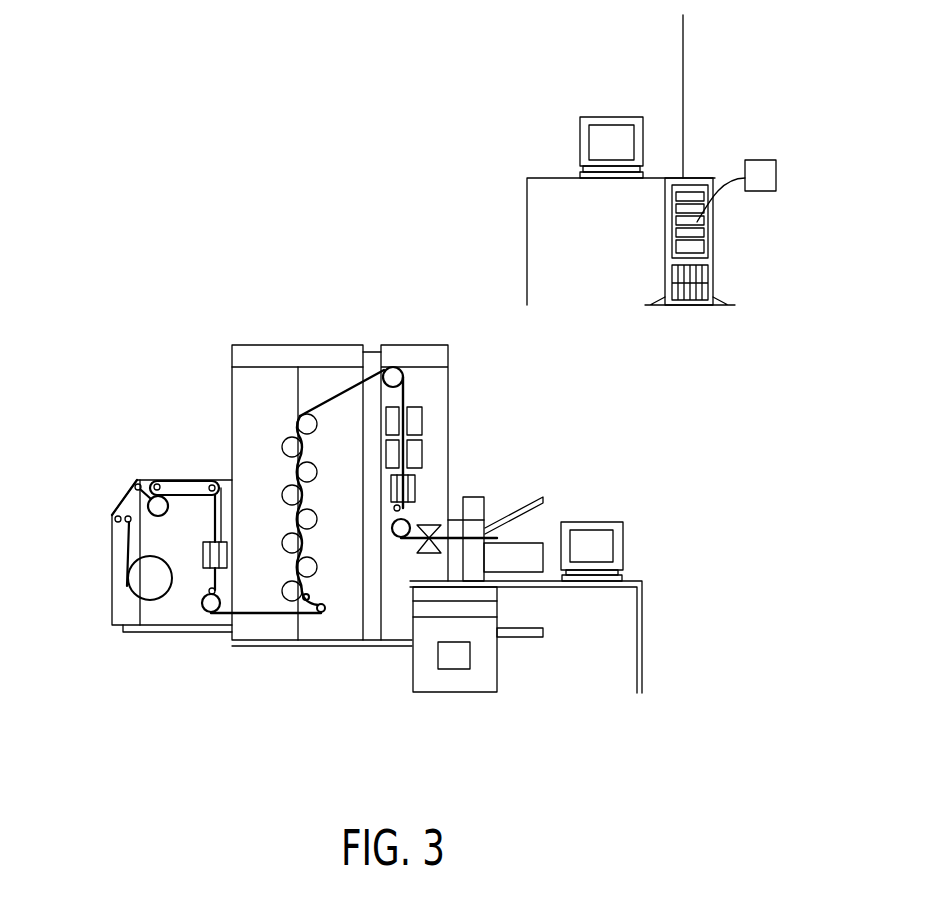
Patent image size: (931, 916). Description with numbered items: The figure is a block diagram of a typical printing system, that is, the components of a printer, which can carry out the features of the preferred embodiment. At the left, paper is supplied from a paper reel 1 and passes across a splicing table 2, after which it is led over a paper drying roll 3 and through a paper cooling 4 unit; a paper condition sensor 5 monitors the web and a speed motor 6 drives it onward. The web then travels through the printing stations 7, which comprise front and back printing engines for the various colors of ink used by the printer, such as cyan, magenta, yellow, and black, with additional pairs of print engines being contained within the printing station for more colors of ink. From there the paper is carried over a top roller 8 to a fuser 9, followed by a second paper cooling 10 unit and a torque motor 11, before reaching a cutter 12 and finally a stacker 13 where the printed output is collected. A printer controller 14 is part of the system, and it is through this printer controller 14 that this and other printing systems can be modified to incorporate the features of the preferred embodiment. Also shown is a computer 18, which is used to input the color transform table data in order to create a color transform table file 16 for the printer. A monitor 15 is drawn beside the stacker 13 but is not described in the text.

The paper reel 1 is at (147, 590).
The splicing table 2 is at (117, 496).
The paper drying roll 3 is at (150, 478).
The paper cooling 4 is at (210, 545).
The paper condition sensor 5 is at (203, 612).
The speed motor 6 is at (330, 614).
The printing stations 7 is at (272, 445).
The top roller 8 is at (392, 368).
The fuser 9 is at (421, 417).
The paper cooling 10 is at (417, 481).
The torque motor 11 is at (406, 517).
The cutter 12 is at (432, 523).
The stacker 13 is at (535, 522).
The printer controller 14 is at (427, 683).
The monitor 15 is at (600, 548).
The color transform table file 16 is at (453, 657).
The computer 18 is at (607, 117).